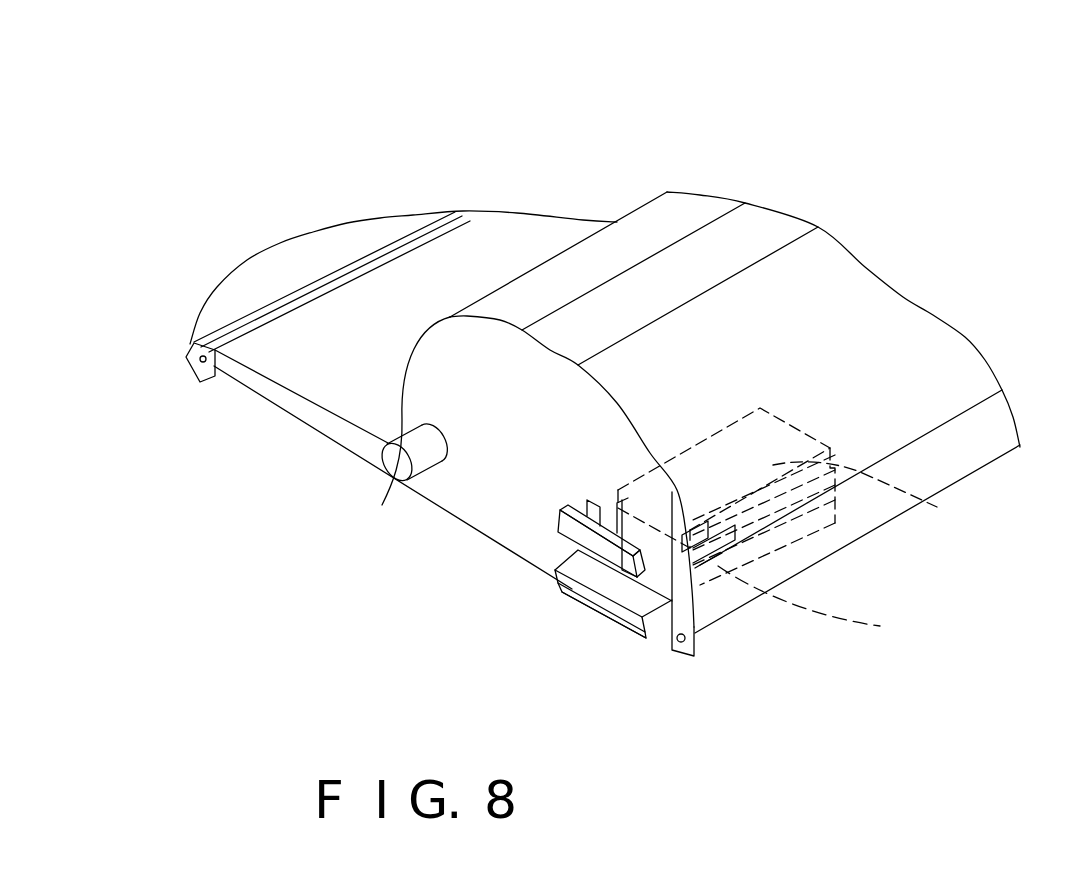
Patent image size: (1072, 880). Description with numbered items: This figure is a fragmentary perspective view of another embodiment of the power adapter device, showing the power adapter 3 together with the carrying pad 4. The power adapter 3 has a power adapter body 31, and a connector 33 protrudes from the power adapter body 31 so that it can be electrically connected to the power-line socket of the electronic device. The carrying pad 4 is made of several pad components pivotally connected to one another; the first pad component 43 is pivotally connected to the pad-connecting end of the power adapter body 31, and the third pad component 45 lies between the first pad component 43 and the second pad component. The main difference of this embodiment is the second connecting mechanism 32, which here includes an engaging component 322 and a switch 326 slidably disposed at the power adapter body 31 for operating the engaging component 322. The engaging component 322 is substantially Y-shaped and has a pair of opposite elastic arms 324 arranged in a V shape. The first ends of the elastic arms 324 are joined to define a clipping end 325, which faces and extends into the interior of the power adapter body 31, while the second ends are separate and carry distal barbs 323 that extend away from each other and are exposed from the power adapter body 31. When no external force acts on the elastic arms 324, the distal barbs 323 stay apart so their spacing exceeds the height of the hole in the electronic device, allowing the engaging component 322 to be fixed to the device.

The power adapter 3 is at (883, 210).
The carrying pad 4 is at (340, 133).
The power adapter body 31 is at (932, 361).
The second connecting mechanism 32 is at (605, 616).
The connector 33 is at (397, 465).
The first pad component 43 is at (510, 225).
The third pad component 45 is at (289, 250).
The engaging component 322 is at (668, 602).
The distal barbs 323 is at (573, 523).
The elastic arms 324 is at (687, 583).
The clipping end 325 is at (880, 626).
The switch 326 is at (937, 507).